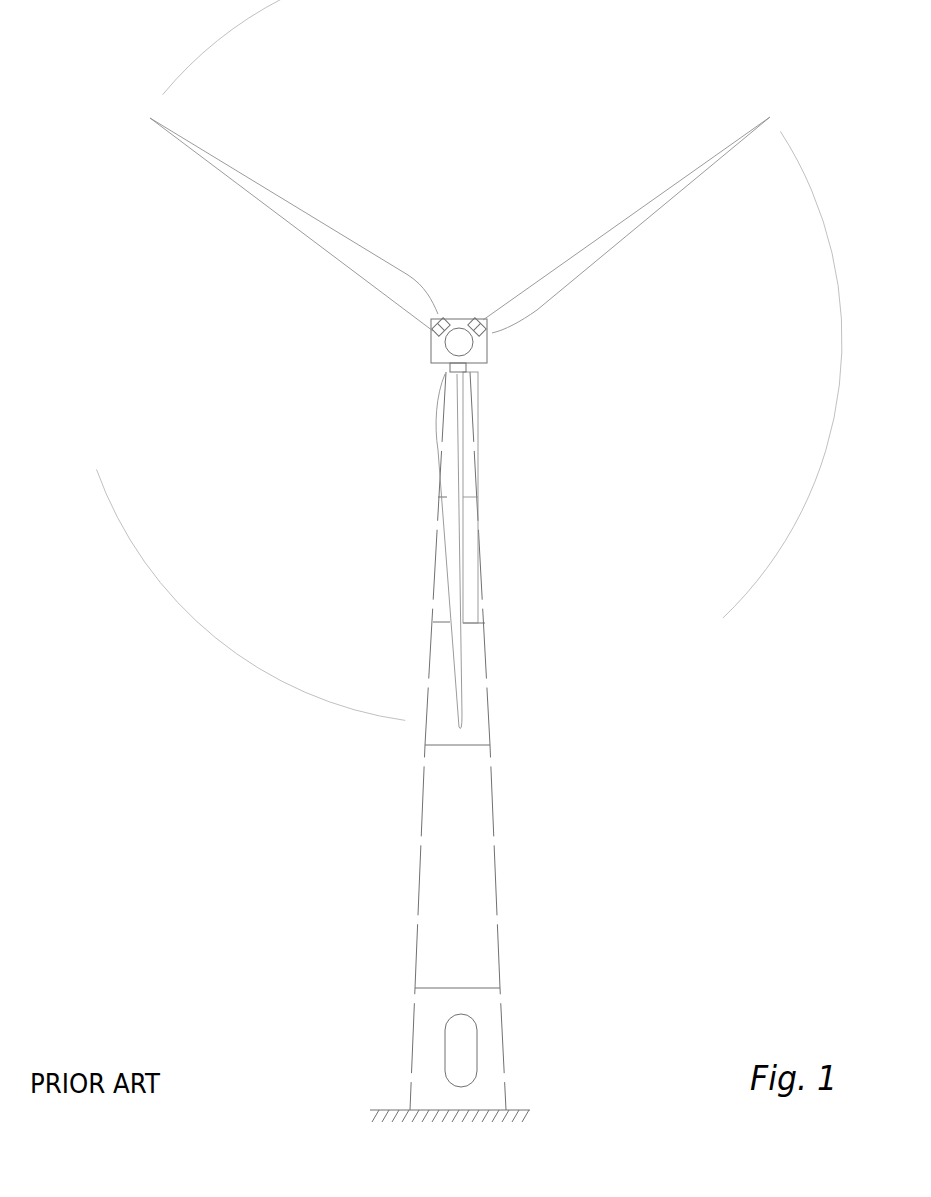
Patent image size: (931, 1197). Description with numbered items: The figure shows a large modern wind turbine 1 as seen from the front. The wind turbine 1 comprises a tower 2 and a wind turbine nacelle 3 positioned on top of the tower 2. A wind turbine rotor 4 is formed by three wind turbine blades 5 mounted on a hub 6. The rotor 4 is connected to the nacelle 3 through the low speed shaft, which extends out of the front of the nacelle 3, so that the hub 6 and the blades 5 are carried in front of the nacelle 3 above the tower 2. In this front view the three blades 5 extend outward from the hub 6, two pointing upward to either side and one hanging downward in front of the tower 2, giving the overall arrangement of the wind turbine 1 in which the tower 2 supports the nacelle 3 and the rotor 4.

The wind turbine 1 is at (381, 952).
The tower 2 is at (487, 817).
The wind turbine nacelle 3 is at (487, 367).
The wind turbine rotor 4 is at (430, 338).
The wind turbine blades 5 is at (460, 585).
The hub 6 is at (457, 342).